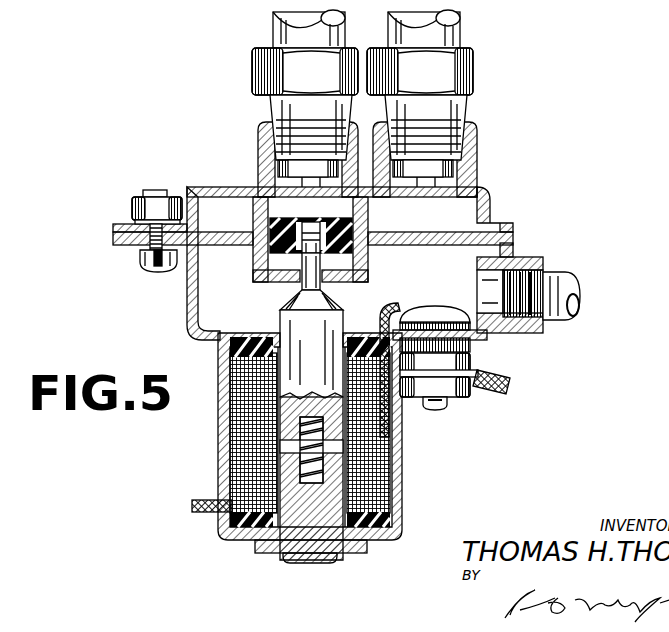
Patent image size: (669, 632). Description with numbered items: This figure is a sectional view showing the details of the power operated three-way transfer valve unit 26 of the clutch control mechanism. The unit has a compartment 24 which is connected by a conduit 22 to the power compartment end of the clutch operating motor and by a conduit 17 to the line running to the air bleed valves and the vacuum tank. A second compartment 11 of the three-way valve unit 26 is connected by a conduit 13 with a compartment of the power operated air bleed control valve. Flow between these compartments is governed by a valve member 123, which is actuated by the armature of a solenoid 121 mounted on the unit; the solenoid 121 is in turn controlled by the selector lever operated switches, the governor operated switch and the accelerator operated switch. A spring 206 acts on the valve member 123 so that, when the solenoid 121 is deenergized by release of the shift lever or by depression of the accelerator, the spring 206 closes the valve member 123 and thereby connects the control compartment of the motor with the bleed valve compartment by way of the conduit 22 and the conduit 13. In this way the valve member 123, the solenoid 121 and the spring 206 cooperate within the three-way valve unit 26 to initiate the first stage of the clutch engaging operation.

The conduit 17 is at (290, 28).
The conduit 22 is at (458, 34).
The compartment 24 is at (463, 213).
The three-way valve unit 26 is at (500, 216).
The valve member 123 is at (345, 230).
The conduit 13 is at (557, 279).
The compartment 11 is at (216, 312).
The spring 206 is at (300, 447).
The solenoid 121 is at (402, 462).